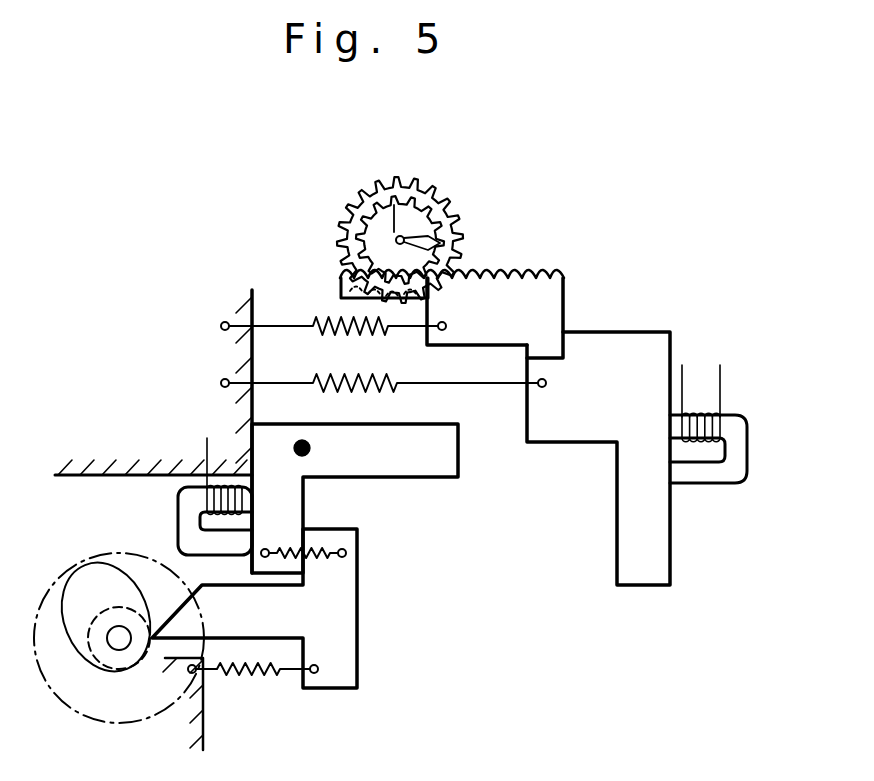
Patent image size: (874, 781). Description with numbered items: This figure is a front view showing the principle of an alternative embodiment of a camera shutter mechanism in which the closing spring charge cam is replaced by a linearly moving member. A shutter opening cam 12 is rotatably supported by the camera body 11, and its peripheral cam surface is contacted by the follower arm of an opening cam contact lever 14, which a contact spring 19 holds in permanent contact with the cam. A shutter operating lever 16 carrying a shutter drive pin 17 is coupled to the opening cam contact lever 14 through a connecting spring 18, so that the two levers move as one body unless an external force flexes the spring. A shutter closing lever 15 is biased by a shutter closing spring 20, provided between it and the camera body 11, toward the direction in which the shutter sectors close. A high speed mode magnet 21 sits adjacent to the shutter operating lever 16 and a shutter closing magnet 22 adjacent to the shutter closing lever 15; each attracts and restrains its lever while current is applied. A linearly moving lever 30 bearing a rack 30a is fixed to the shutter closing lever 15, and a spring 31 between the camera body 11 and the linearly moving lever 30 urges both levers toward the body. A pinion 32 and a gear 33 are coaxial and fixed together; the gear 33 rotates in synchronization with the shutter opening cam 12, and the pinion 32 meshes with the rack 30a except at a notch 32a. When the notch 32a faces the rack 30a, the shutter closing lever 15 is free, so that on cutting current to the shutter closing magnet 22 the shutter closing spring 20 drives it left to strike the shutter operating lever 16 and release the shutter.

The camera body 11 is at (143, 458).
The shutter opening cam 12 is at (78, 583).
The opening cam contact lever 14 is at (322, 607).
The shutter closing lever 15 is at (638, 345).
The shutter operating lever 16 is at (400, 448).
The shutter drive pin 17 is at (310, 454).
The connecting spring 18 is at (308, 553).
The contact spring 19 is at (246, 677).
The shutter closing spring 20 is at (397, 390).
The high speed mode magnet 21 is at (185, 519).
The shutter closing magnet 22 is at (738, 443).
The linearly moving lever 30 is at (486, 281).
The rack 30a is at (517, 270).
The spring 31 is at (328, 318).
The pinion 32 is at (396, 200).
The notch 32a is at (405, 236).
The gear 33 is at (360, 195).